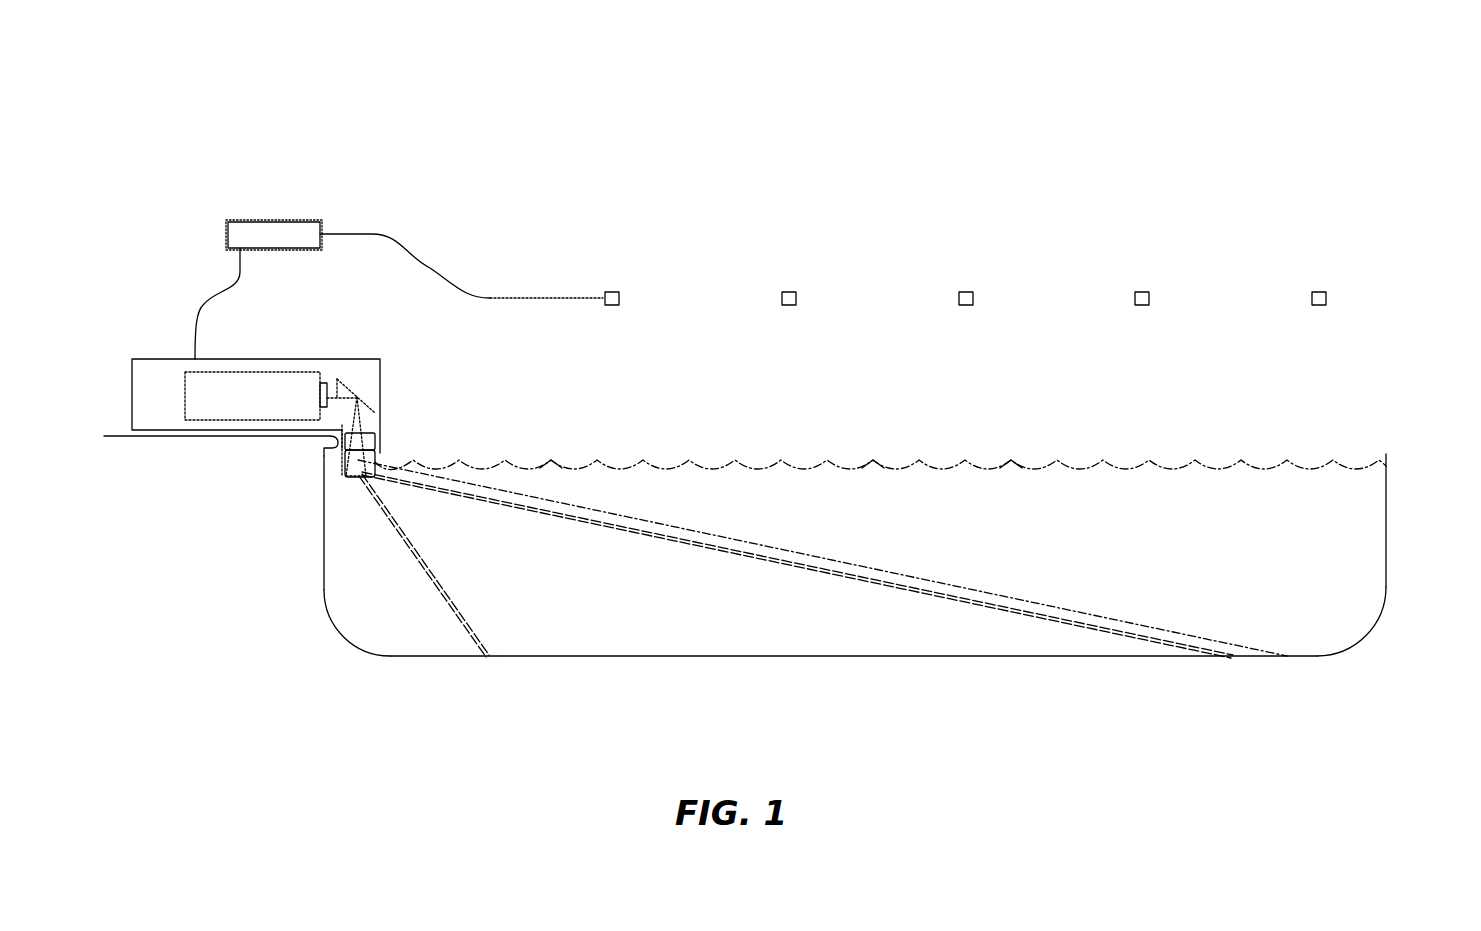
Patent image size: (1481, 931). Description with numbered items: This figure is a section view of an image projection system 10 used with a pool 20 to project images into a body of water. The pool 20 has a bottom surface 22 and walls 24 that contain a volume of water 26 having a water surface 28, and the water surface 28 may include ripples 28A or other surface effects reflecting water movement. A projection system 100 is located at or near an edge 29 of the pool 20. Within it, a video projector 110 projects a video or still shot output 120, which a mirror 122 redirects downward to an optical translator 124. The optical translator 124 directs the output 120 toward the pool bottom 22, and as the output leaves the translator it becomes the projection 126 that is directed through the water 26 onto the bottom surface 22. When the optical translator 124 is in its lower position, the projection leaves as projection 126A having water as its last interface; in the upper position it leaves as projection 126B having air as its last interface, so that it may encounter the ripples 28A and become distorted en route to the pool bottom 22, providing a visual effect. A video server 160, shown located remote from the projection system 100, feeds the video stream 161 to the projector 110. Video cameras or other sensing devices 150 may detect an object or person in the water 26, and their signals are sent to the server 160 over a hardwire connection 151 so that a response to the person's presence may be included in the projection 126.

The projection system 10 is at (208, 145).
The video server 160 is at (274, 222).
The hardwire connection 151 is at (418, 248).
The video camera 150 is at (612, 292).
The projection system 100 is at (152, 355).
The video stream 161 is at (203, 310).
The video projector 110 is at (232, 408).
The video or still shot output 120 is at (337, 395).
The mirror 122 is at (373, 408).
The optical translator 124 is at (383, 433).
The edge 29 is at (323, 441).
The wall 24 is at (323, 528).
The pool 20 is at (325, 610).
The bottom surface 22 is at (638, 656).
The water surface 28 is at (1213, 462).
The ripples 28A is at (551, 460).
The projection 126 is at (621, 600).
The projection with air last interface 126B is at (822, 557).
The projection with water last interface 126A is at (898, 583).
The water 26 is at (1166, 560).